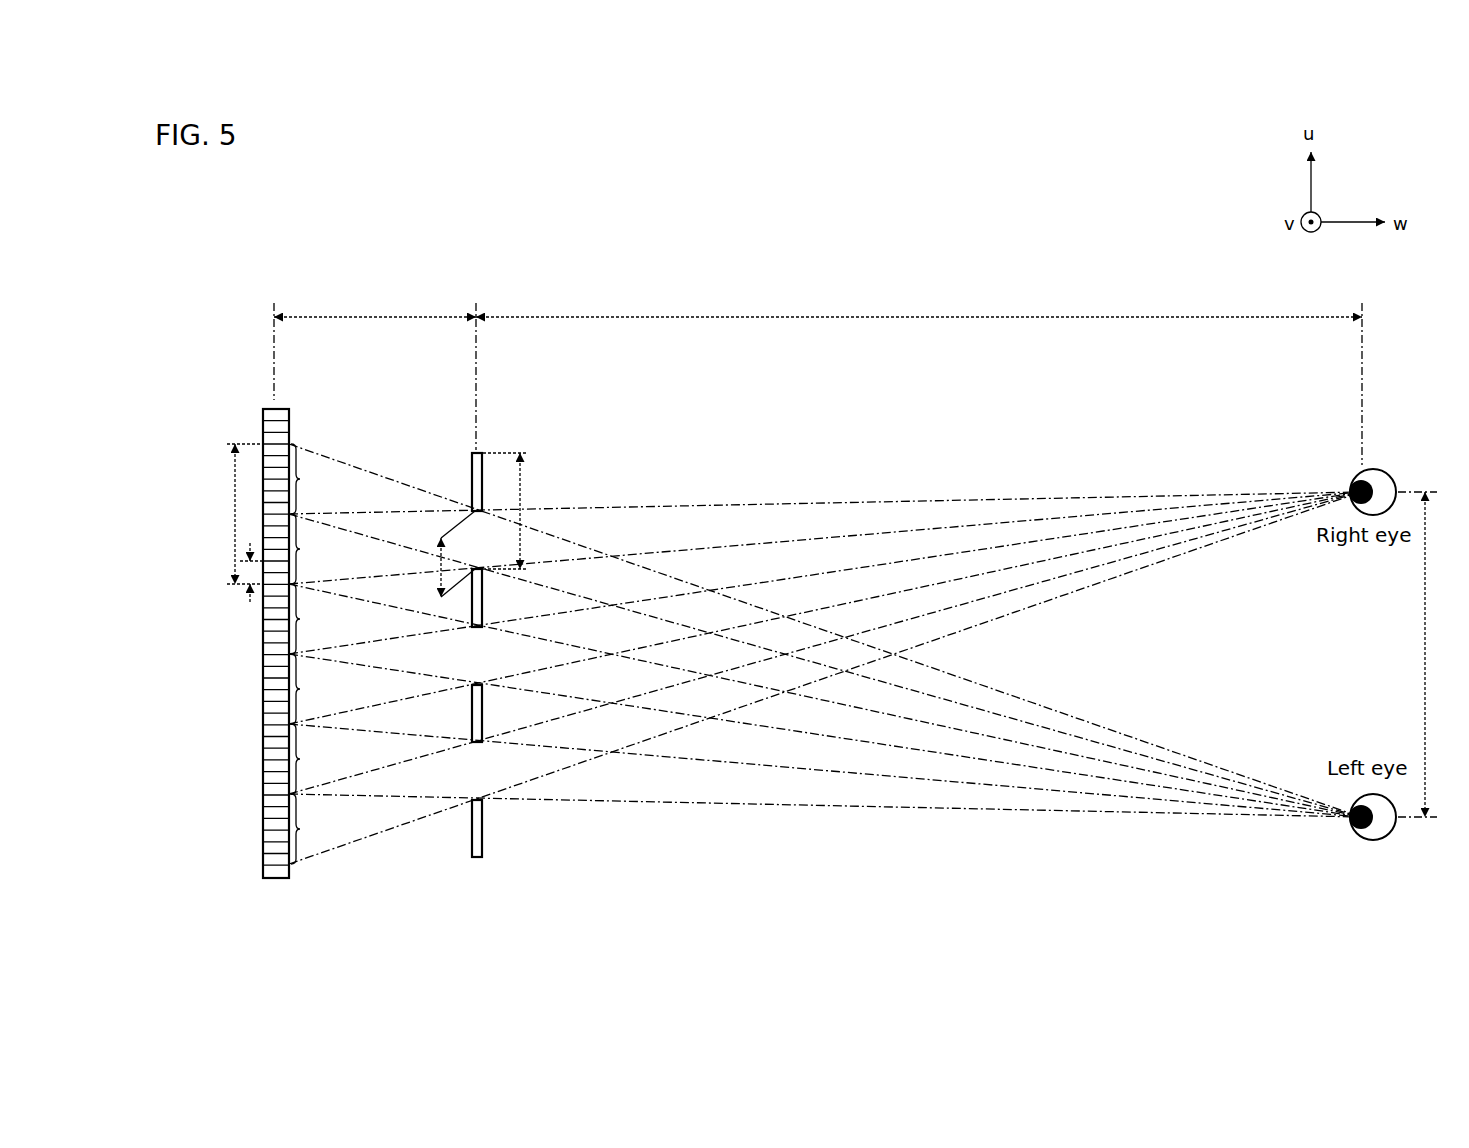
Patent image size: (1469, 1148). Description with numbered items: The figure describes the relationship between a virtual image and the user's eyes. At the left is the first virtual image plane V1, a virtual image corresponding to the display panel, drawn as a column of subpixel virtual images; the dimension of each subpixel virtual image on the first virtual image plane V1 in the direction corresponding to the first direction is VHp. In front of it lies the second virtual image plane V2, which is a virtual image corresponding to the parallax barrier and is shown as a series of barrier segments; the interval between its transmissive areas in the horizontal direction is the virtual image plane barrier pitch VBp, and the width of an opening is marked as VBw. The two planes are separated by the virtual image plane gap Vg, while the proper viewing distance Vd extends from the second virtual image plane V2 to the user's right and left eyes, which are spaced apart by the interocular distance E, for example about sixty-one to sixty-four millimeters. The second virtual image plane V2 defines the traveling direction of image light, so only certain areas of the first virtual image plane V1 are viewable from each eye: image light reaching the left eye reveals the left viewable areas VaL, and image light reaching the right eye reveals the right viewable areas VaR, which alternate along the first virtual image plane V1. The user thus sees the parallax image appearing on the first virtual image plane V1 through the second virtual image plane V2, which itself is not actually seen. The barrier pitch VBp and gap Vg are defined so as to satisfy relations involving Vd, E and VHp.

The first virtual image plane V1 is at (283, 402).
The second virtual image plane V2 is at (494, 447).
The left viewable areas VaL is at (316, 619).
The right viewable areas VaR is at (317, 689).
The dimension of the virtual image for the subpixels VHp is at (251, 590).
The virtual image plane barrier pitch VBp is at (525, 511).
The barrier opening width VBw is at (436, 556).
The virtual image plane gap Vg is at (375, 302).
The proper viewing distance Vd is at (919, 302).
The interocular distance E is at (1421, 654).